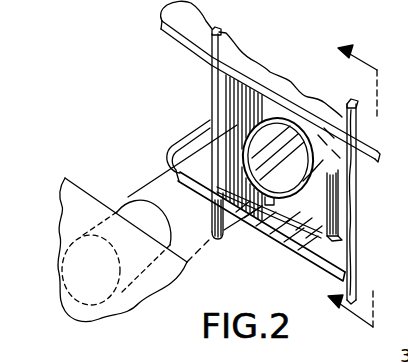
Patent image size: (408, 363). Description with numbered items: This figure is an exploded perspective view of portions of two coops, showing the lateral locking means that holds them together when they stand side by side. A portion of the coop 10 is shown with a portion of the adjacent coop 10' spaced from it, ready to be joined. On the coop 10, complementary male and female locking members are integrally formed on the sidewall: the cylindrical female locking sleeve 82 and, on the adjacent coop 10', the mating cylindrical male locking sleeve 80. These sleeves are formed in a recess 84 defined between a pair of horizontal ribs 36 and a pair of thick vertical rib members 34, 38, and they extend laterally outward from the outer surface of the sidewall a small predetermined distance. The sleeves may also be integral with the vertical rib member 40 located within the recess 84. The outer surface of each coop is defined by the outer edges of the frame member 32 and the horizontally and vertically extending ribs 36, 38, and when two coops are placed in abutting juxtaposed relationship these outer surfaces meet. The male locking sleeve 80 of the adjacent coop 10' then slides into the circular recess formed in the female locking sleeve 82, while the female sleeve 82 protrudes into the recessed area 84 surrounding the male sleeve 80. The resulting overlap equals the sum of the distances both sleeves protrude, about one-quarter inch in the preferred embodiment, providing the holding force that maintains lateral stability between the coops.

The coop 10 is at (252, 167).
The adjacent coop 10' is at (122, 243).
The frame member 32 is at (296, 250).
The thick vertical rib member 34 is at (211, 112).
The horizontal rib 36 is at (261, 84).
The vertical rib member 38 is at (359, 222).
The vertical rib member 40 is at (336, 185).
The male locking sleeve 80 is at (154, 205).
The female locking sleeve 82 is at (303, 125).
The recess 84 is at (240, 100).